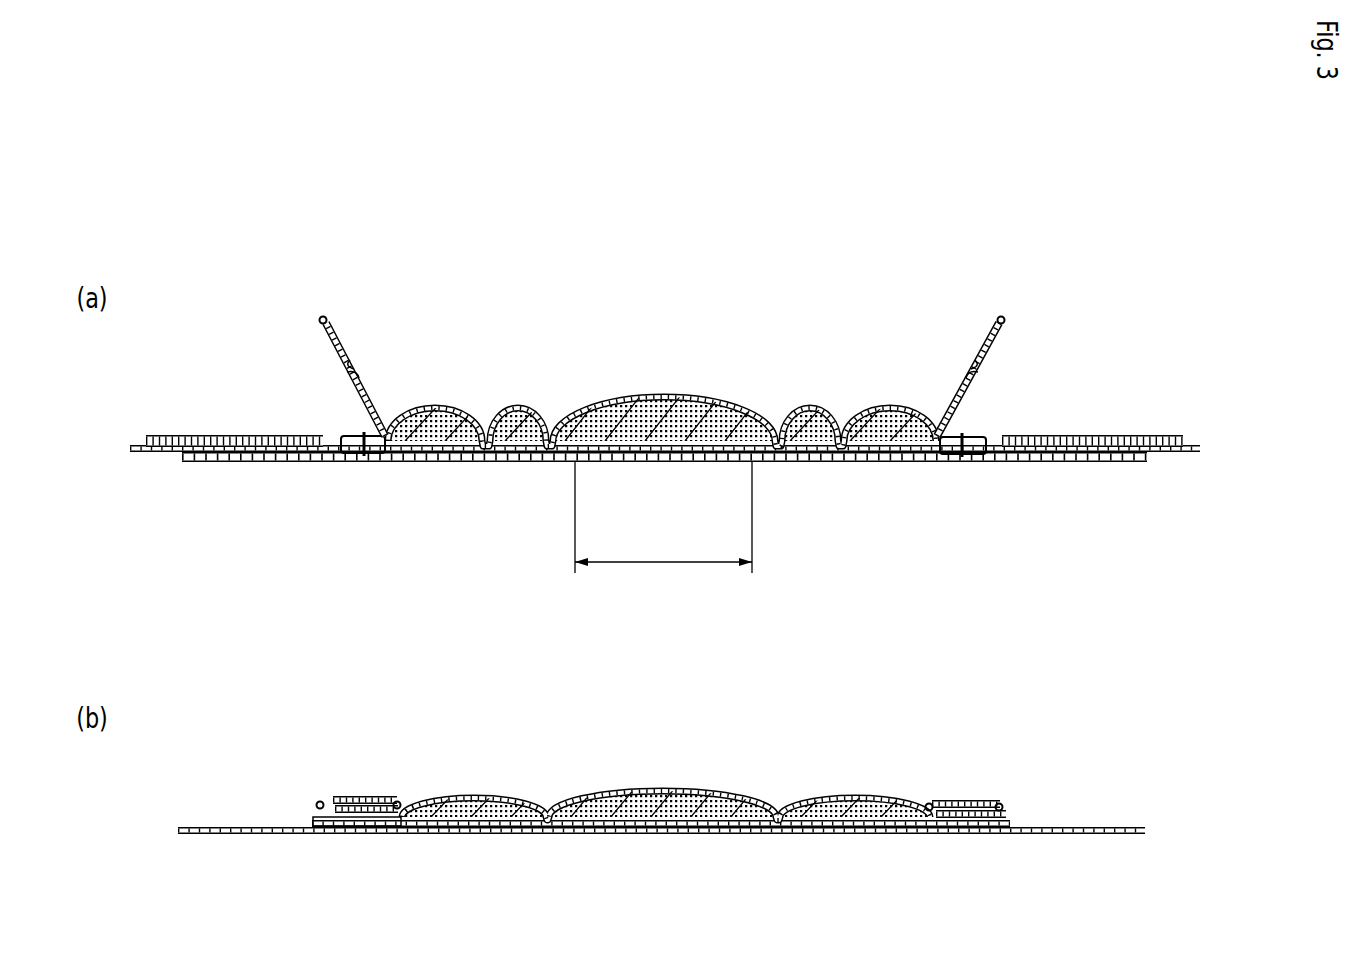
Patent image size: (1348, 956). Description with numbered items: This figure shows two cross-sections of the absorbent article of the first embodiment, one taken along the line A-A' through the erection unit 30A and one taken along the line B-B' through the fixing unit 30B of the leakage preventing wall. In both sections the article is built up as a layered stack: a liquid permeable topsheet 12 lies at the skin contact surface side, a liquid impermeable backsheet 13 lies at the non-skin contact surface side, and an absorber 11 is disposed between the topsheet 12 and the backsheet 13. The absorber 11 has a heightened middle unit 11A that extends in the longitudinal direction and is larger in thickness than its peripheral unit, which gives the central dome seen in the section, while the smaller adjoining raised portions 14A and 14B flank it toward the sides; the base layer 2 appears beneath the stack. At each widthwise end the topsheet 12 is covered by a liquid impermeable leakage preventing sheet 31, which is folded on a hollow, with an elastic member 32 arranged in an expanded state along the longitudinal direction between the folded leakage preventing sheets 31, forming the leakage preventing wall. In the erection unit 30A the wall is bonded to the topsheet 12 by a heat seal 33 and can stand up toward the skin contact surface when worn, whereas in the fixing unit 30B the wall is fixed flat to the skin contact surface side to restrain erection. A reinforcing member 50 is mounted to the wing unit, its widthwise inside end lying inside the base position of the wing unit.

The base sheet 2 is at (690, 463).
The absorber 11 is at (662, 562).
The heightened middle unit 11A is at (663, 529).
The liquid permeable topsheet 12 is at (652, 394).
The liquid impermeable backsheet 13 is at (630, 452).
The outer side raised portion 14A is at (486, 403).
The inner side raised portion 14B is at (548, 403).
The erection unit 30A is at (984, 294).
The fixing unit 30B is at (937, 794).
The leakage preventing sheet 31 is at (352, 356).
The elastic member 32 is at (384, 436).
The heat seal 33 is at (365, 463).
The reinforcing member 50 is at (165, 450).